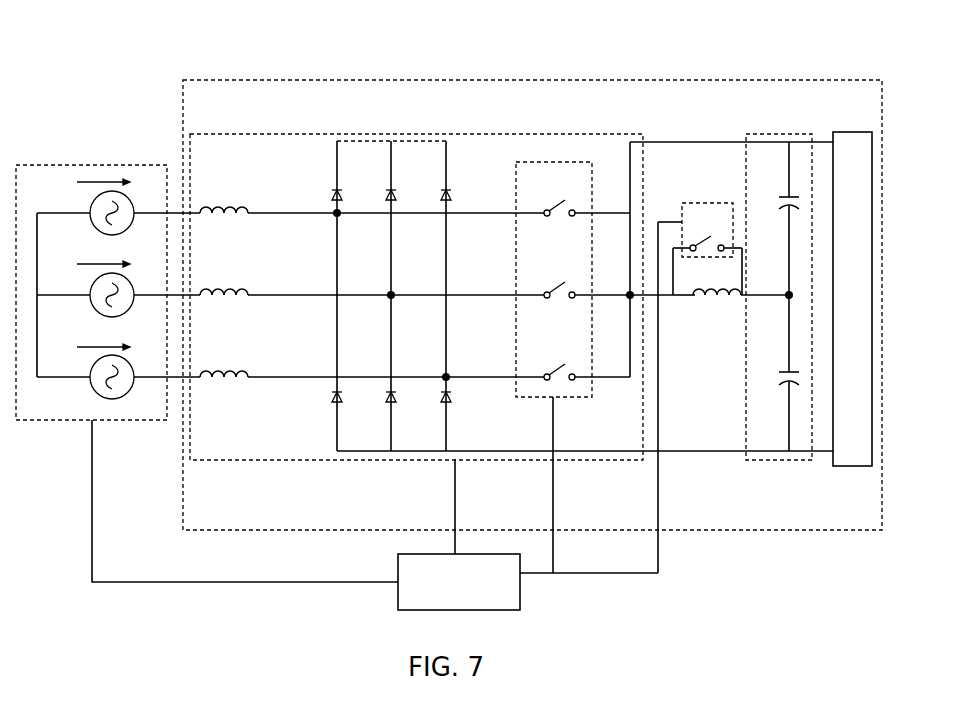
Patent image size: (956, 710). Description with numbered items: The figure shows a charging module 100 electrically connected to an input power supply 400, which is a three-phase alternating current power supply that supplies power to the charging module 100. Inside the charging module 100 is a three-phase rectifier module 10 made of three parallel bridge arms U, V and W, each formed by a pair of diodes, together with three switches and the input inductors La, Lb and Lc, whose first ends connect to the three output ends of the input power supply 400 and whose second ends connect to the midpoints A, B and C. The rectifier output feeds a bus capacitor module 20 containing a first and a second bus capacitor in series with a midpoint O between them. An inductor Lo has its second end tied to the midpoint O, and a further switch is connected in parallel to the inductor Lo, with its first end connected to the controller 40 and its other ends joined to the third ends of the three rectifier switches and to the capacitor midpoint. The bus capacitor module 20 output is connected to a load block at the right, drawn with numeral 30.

The charging module 100 is at (296, 80).
The input power supply 400 is at (62, 164).
The three-phase rectifier module 10 is at (606, 462).
The bus capacitor module 20 is at (758, 462).
The load 30 is at (840, 468).
The controller 40 is at (398, 565).